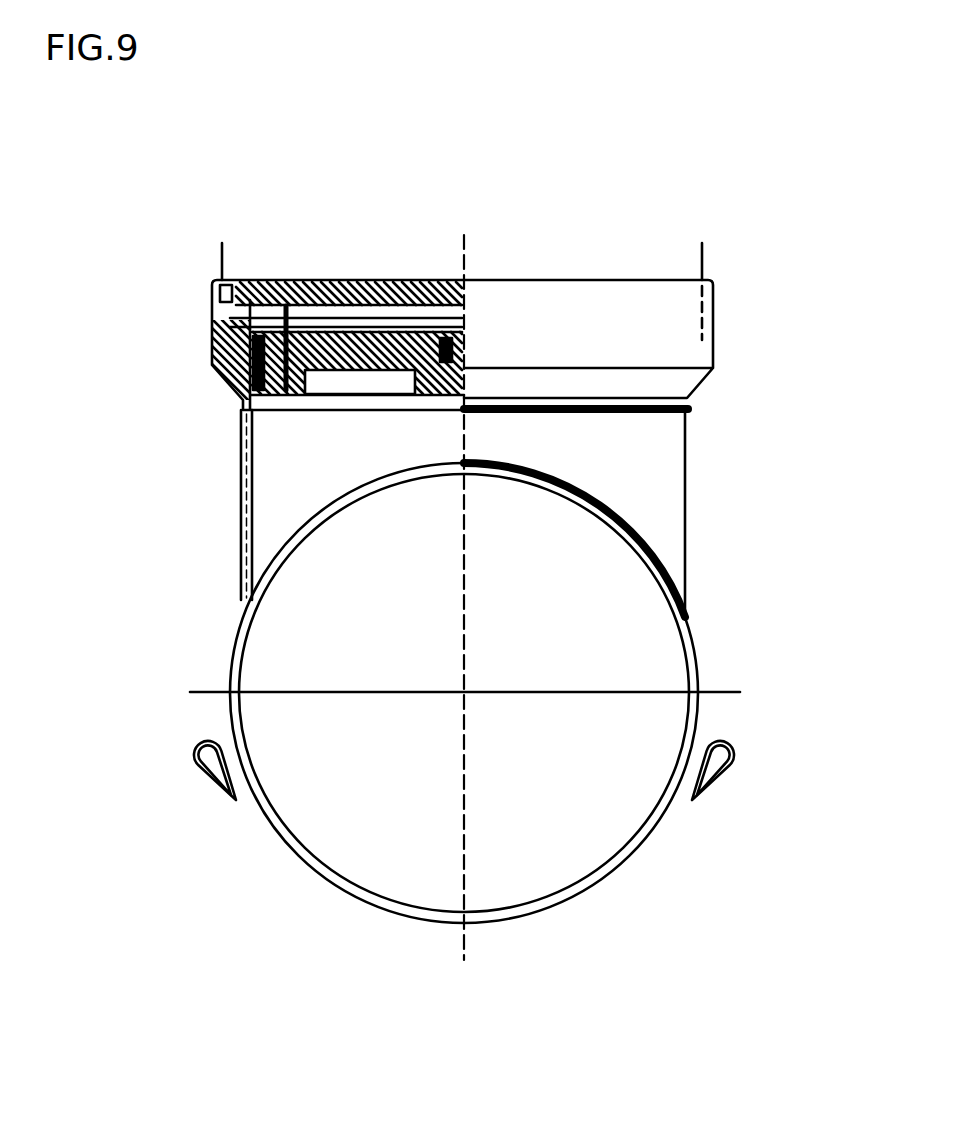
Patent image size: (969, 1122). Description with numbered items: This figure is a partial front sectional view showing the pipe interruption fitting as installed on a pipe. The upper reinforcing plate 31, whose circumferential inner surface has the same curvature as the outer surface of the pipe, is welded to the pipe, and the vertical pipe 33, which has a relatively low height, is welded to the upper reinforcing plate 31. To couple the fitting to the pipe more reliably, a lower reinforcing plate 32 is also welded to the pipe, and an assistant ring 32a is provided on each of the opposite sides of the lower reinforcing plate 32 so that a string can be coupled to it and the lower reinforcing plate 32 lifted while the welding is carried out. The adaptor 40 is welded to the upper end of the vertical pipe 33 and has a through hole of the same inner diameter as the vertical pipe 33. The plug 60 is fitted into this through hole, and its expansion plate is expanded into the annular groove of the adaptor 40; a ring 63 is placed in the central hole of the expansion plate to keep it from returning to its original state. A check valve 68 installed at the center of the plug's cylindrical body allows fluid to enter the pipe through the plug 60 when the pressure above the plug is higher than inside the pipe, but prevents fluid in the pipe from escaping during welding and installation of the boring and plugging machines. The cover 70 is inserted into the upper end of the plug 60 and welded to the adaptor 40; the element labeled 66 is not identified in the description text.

The upper reinforcing plate 31 is at (227, 669).
The lower reinforcing plate 32 is at (604, 876).
The assistant ring 32a is at (214, 800).
The vertical pipe 33 is at (685, 500).
The adaptor 40 is at (212, 355).
The plug 60 is at (467, 331).
The ring 63 is at (415, 318).
The fastening bolt 66 is at (283, 306).
The check valve 68 is at (460, 411).
The cover 70 is at (380, 278).